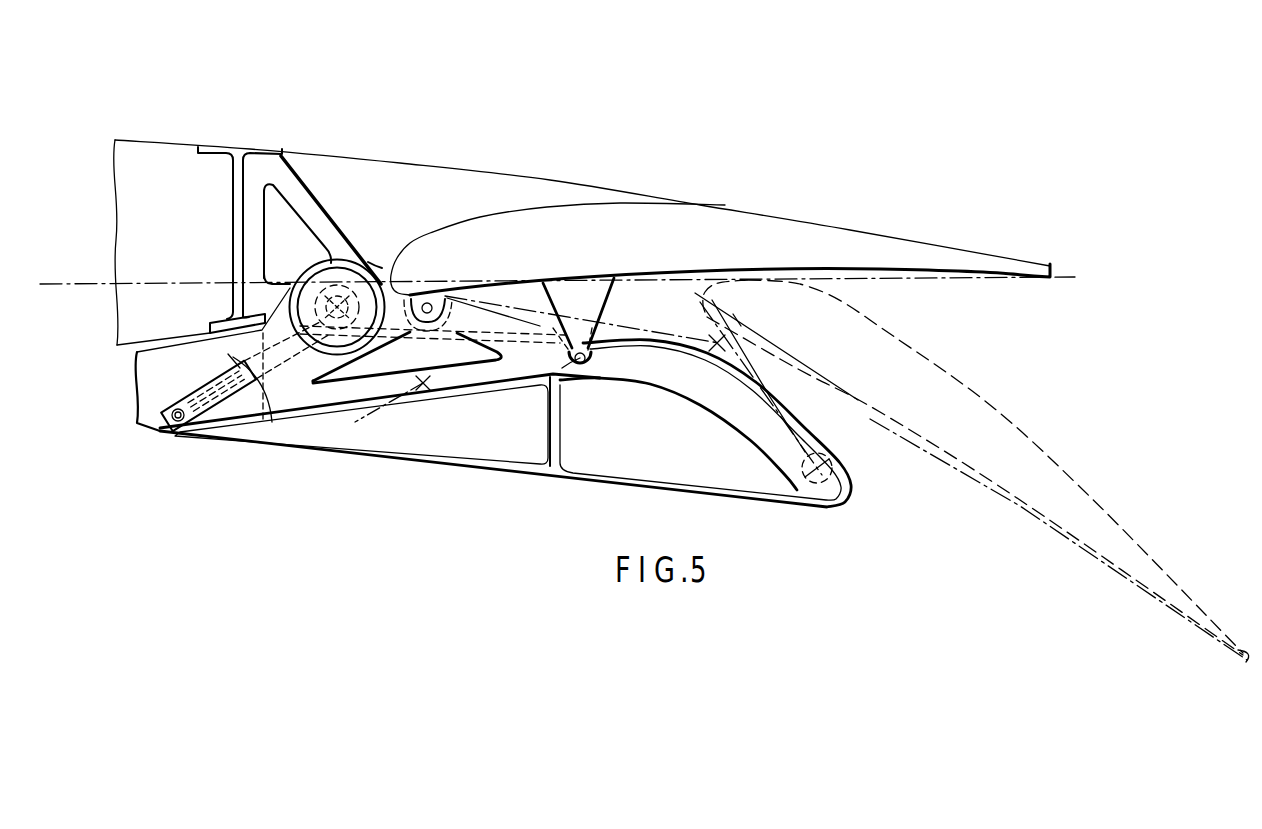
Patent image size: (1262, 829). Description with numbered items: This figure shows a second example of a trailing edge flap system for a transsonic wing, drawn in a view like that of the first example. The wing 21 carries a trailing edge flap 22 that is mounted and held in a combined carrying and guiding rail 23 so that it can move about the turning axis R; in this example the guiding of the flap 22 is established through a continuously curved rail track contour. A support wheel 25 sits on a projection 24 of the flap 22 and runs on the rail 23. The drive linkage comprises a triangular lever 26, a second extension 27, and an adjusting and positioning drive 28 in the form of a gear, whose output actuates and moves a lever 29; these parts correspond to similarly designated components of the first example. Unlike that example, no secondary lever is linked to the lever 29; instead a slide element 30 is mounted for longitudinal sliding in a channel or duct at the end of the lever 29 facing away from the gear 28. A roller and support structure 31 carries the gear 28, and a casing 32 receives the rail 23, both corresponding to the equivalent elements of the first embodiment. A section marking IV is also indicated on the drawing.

The wing 21 is at (179, 136).
The trailing edge flap 22 is at (808, 230).
The combined carrying and guiding rail 23 is at (725, 415).
The projection 24 is at (604, 297).
The support wheel 25 is at (590, 364).
The triangular lever 26 is at (428, 392).
The second extension 27 is at (440, 365).
The adjusting and positioning drive 28 is at (376, 265).
The lever 29 is at (339, 278).
The slide element 30 is at (190, 428).
The roller and support structure 31 is at (287, 180).
The casing 32 is at (552, 482).
The turning axis R is at (577, 372).
The section line IV is at (333, 378).